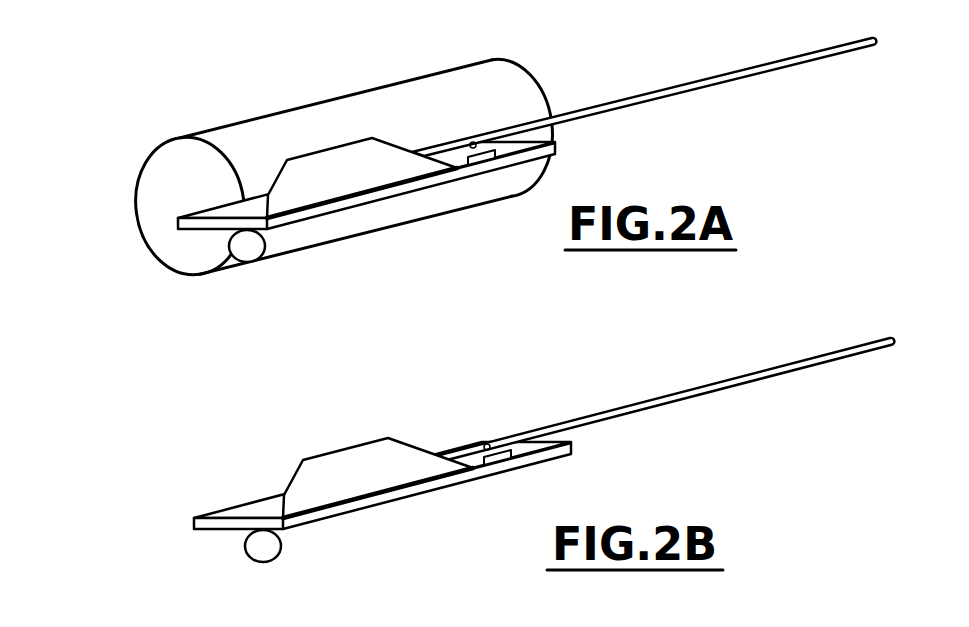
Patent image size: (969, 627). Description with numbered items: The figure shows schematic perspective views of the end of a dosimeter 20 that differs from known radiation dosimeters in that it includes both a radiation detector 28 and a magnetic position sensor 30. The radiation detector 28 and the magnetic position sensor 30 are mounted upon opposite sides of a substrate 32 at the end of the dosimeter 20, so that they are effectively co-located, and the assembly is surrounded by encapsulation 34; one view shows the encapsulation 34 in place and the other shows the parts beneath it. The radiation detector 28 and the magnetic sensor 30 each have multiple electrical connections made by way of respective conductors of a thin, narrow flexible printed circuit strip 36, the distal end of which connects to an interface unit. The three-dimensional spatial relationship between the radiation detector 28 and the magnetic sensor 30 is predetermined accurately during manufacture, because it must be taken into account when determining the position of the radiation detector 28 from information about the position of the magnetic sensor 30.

In FIG. 2A, the dosimeter 20 is at (454, 180).
In FIG. 2B, the dosimeter 20 is at (498, 460).
In FIG. 2B, the radiation detector 28 is at (365, 460).
In FIG. 2A, the magnetic position sensor 30 is at (409, 193).
In FIG. 2B, the magnetic position sensor 30 is at (413, 497).
In FIG. 2A, the substrate 32 is at (203, 228).
In FIG. 2B, the substrate 32 is at (228, 522).
In FIG. 2A, the encapsulation 34 is at (345, 92).
In FIG. 2A, the flexible printed circuit strip 36 is at (690, 82).
In FIG. 2B, the flexible printed circuit strip 36 is at (748, 373).